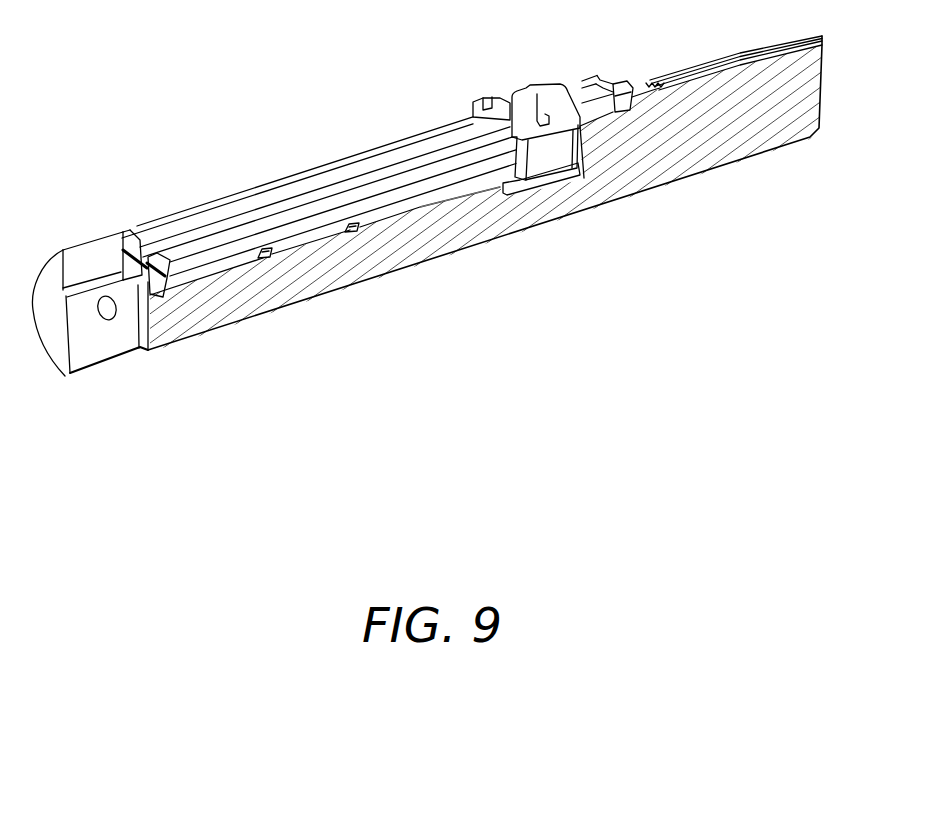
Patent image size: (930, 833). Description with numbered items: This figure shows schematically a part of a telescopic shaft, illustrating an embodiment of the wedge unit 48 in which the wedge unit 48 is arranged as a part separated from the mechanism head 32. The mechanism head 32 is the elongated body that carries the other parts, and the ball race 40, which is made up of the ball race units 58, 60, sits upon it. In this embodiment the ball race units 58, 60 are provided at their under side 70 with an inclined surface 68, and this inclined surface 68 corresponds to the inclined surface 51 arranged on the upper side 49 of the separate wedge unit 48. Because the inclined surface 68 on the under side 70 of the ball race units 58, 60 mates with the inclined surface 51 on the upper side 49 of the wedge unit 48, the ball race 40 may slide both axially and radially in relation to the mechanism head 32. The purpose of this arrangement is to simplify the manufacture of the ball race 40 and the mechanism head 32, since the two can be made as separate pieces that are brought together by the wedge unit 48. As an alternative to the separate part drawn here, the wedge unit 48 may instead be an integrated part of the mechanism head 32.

The mechanism head 32 is at (707, 147).
The ball race 40 is at (477, 173).
The wedge unit 48 is at (463, 193).
The upper side 49 is at (356, 301).
The inclined surface 51 is at (352, 232).
The ball race unit 58 is at (113, 245).
The ball race unit 60 is at (175, 272).
The inclined surface 68 is at (237, 168).
The under side 70 is at (267, 252).